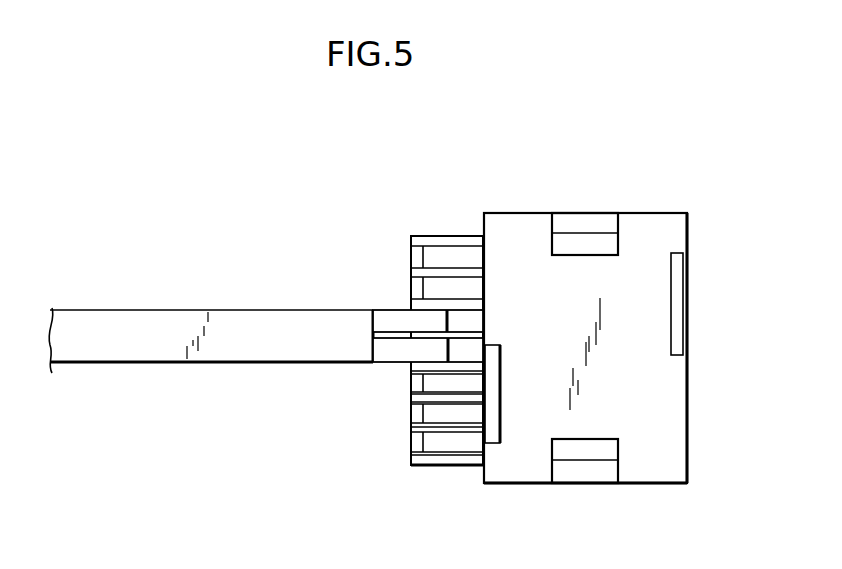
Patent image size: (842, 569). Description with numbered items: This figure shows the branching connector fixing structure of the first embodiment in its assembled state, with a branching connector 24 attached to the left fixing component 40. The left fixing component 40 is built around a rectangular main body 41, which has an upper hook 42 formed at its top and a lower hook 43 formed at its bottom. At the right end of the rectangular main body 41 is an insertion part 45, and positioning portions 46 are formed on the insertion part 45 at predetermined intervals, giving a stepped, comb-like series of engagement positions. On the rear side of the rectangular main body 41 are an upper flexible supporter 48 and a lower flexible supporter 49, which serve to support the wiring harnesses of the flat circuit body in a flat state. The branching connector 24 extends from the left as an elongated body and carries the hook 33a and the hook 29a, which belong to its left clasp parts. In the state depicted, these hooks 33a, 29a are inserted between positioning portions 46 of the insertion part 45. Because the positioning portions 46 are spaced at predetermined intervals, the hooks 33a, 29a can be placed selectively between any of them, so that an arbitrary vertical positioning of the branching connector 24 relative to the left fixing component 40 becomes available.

The branching connector 24 is at (242, 310).
The hook 29a is at (410, 348).
The hook 33a is at (400, 322).
The left fixing component 40 is at (688, 415).
The rectangular main body 41 is at (670, 382).
The upper hook 42 is at (585, 241).
The lower hook 43 is at (595, 452).
The insertion part 45 is at (412, 441).
The positioning portions 46 is at (452, 272).
The upper flexible supporter 48 is at (678, 290).
The lower flexible supporter 49 is at (500, 403).